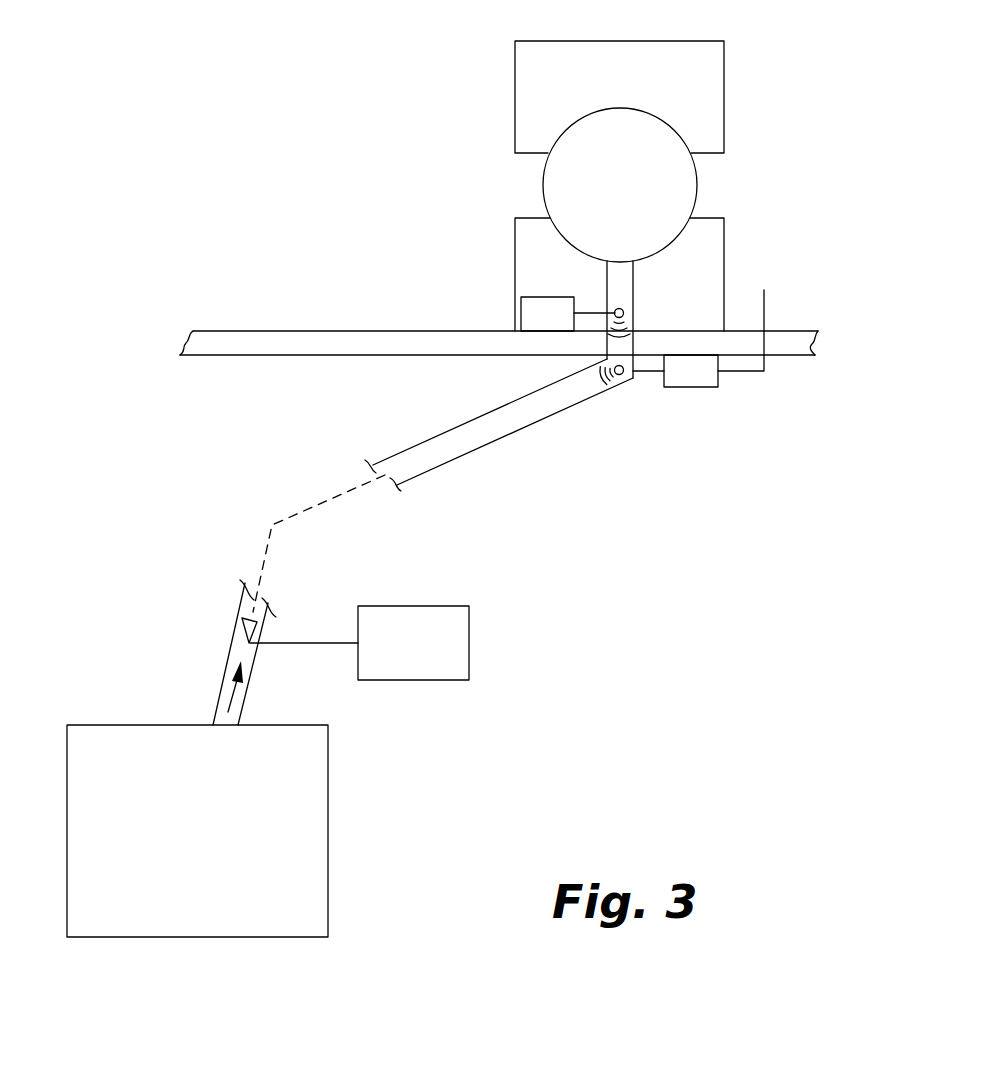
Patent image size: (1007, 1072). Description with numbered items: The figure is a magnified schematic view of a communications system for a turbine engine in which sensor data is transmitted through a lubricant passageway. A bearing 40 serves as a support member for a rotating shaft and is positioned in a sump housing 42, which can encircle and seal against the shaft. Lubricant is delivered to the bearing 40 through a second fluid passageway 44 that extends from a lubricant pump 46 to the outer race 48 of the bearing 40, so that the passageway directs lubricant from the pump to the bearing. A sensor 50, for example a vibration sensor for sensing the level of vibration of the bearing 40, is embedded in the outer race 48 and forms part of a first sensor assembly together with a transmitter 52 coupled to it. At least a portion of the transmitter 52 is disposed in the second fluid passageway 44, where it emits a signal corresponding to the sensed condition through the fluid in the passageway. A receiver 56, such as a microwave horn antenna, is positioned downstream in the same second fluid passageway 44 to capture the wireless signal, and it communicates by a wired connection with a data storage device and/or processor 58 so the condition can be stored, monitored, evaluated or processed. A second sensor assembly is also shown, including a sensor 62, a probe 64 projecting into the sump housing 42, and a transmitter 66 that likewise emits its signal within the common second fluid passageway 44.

The bearing 40 is at (462, 153).
The sump housing 42 is at (785, 331).
The second fluid passageway 44 is at (490, 460).
The lubricant pump 46 is at (187, 845).
The outer race 48 is at (535, 243).
The sensor 50 is at (549, 310).
The transmitter 52 is at (623, 309).
The receiver 56 is at (242, 625).
The data storage device and/or processor 58 is at (404, 655).
The sensor 62 is at (708, 387).
The probe 64 is at (752, 372).
The transmitter 66 is at (647, 372).